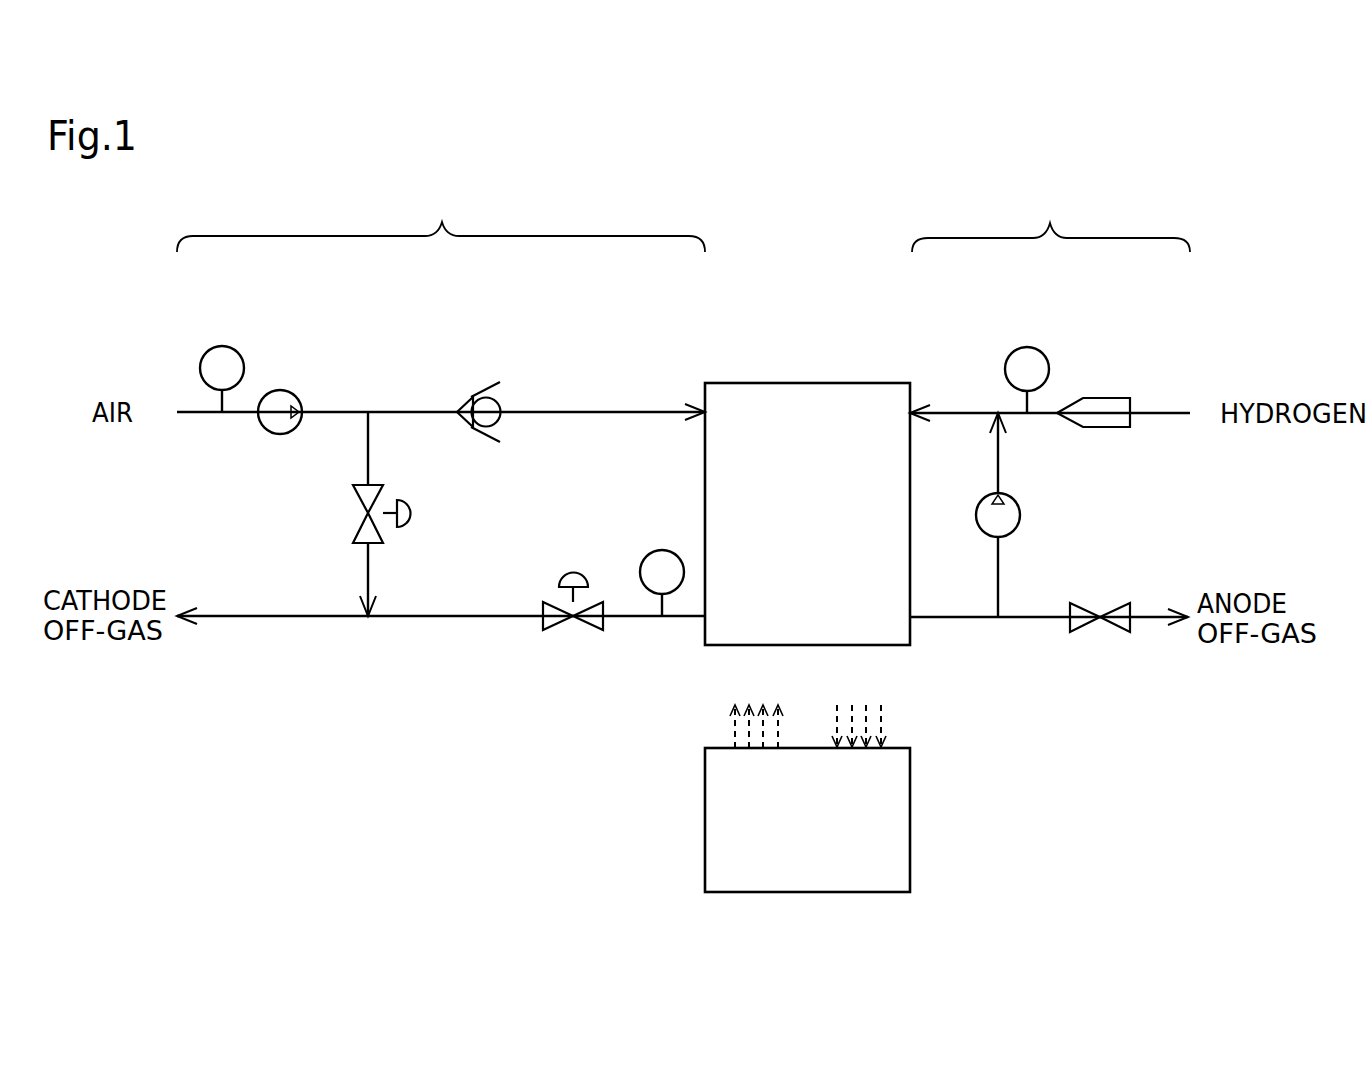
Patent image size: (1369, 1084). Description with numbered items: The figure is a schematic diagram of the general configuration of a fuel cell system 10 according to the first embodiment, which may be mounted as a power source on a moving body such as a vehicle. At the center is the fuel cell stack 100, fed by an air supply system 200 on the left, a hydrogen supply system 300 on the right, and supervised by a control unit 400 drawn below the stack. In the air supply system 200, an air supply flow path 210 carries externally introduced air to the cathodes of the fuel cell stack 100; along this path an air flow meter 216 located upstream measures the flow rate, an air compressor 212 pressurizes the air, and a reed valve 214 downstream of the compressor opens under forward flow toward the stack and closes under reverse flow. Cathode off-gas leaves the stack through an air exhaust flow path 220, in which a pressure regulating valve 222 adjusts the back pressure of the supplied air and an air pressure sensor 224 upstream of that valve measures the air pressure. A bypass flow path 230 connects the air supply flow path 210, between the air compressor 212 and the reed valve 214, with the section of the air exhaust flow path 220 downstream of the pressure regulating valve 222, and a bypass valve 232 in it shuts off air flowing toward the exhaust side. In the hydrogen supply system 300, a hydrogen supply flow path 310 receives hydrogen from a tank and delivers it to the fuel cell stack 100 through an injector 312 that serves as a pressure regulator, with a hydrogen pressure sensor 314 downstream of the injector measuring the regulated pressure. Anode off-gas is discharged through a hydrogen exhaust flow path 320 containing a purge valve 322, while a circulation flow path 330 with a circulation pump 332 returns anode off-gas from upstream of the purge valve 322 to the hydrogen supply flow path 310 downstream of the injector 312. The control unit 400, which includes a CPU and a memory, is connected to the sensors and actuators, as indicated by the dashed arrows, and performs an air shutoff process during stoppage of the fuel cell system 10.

The fuel cell system 10 is at (1240, 160).
The fuel cell stack 100 is at (850, 383).
The air supply system 200 is at (441, 223).
The air supply flow path 210 is at (588, 411).
The air compressor 212 is at (280, 390).
The reed valve 214 is at (485, 393).
The air flow meter 216 is at (222, 346).
The air exhaust flow path 220 is at (296, 618).
The pressure regulating valve 222 is at (573, 572).
The air pressure sensor 224 is at (662, 550).
The bypass flow path 230 is at (368, 448).
The bypass valve 232 is at (411, 512).
The hydrogen supply system 300 is at (1051, 223).
The hydrogen supply flow path 310 is at (950, 412).
The injector 312 is at (1110, 398).
The hydrogen pressure sensor 314 is at (1027, 347).
The hydrogen exhaust flow path 320 is at (955, 620).
The purge valve 322 is at (1108, 603).
The circulation flow path 330 is at (998, 458).
The circulation pump 332 is at (1020, 508).
The control unit 400 is at (910, 805).